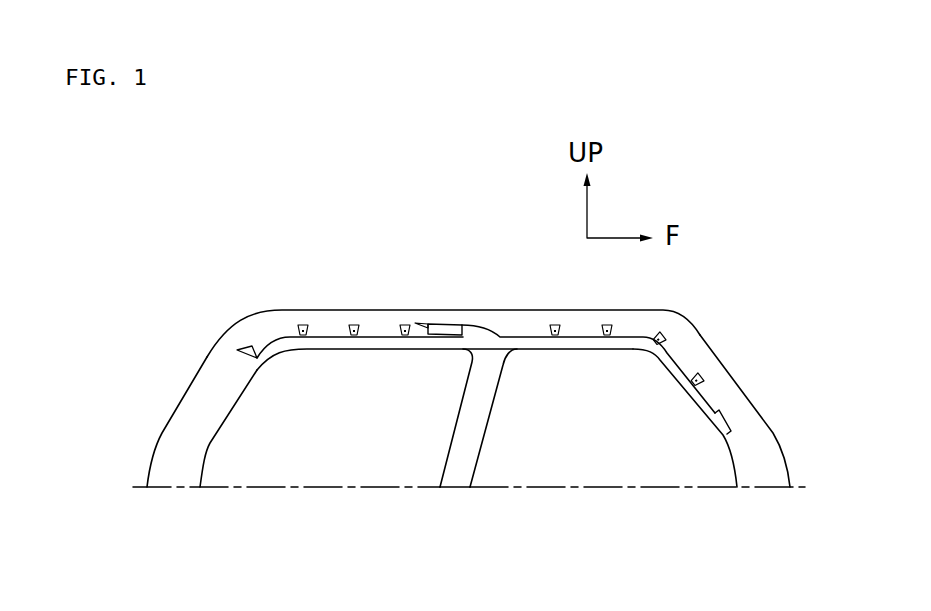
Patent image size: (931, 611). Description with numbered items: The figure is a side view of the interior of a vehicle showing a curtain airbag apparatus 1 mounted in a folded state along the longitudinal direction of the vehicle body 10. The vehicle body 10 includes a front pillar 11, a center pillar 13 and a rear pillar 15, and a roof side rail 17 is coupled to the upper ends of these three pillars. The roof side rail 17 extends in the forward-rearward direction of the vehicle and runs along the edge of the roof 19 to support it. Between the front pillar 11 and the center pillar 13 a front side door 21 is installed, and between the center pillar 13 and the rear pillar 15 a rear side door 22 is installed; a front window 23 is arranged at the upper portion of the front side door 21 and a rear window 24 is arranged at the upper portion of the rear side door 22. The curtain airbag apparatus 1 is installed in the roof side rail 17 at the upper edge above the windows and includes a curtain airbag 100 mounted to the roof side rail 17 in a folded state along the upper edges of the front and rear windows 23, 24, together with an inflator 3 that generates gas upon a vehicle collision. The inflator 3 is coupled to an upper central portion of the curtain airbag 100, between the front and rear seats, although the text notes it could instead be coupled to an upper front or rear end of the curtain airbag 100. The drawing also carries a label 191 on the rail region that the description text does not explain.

The curtain airbag apparatus 1 is at (525, 328).
The inflator 3 is at (450, 328).
The vehicle body 10 is at (211, 335).
The front pillar 11 is at (710, 372).
The center pillar 13 is at (457, 475).
The rear pillar 15 is at (192, 417).
The roof side rail 17 is at (383, 327).
The roof 19 is at (317, 310).
The front side door 21 is at (628, 487).
The rear side door 22 is at (232, 487).
The front window 23 is at (612, 432).
The rear window 24 is at (348, 432).
The curtain airbag 100 is at (655, 355).
The flange tab 191 is at (718, 425).